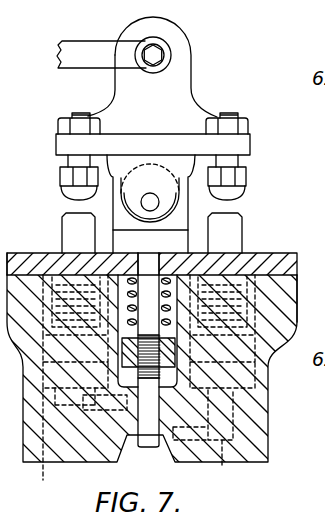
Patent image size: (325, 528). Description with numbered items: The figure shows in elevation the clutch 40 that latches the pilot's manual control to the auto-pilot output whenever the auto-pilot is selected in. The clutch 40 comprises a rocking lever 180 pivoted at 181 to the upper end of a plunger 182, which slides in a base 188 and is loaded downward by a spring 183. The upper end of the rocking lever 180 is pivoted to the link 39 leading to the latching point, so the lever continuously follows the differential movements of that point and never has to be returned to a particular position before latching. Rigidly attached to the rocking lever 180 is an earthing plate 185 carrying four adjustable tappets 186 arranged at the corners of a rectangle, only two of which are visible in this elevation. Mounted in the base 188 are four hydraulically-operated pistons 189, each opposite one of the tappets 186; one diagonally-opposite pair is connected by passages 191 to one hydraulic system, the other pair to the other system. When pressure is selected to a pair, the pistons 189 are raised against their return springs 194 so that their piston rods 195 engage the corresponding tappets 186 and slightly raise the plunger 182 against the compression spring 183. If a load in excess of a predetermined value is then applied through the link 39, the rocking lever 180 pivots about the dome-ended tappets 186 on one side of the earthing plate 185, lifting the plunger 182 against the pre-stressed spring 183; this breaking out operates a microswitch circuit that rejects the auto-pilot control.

The link 39 is at (84, 53).
The clutch 40 is at (276, 384).
The rocking lever 180 is at (180, 97).
The pivot 181 is at (151, 193).
The plunger 182 is at (152, 275).
The spring 183 is at (98, 253).
The earthing plate 185 is at (240, 148).
The adjustable tappets 186 is at (72, 189).
The base 188 is at (280, 307).
The hydraulically-operated pistons 189 is at (141, 389).
The passages 191 is at (97, 418).
The return springs 194 is at (38, 247).
The piston rods 195 is at (77, 223).